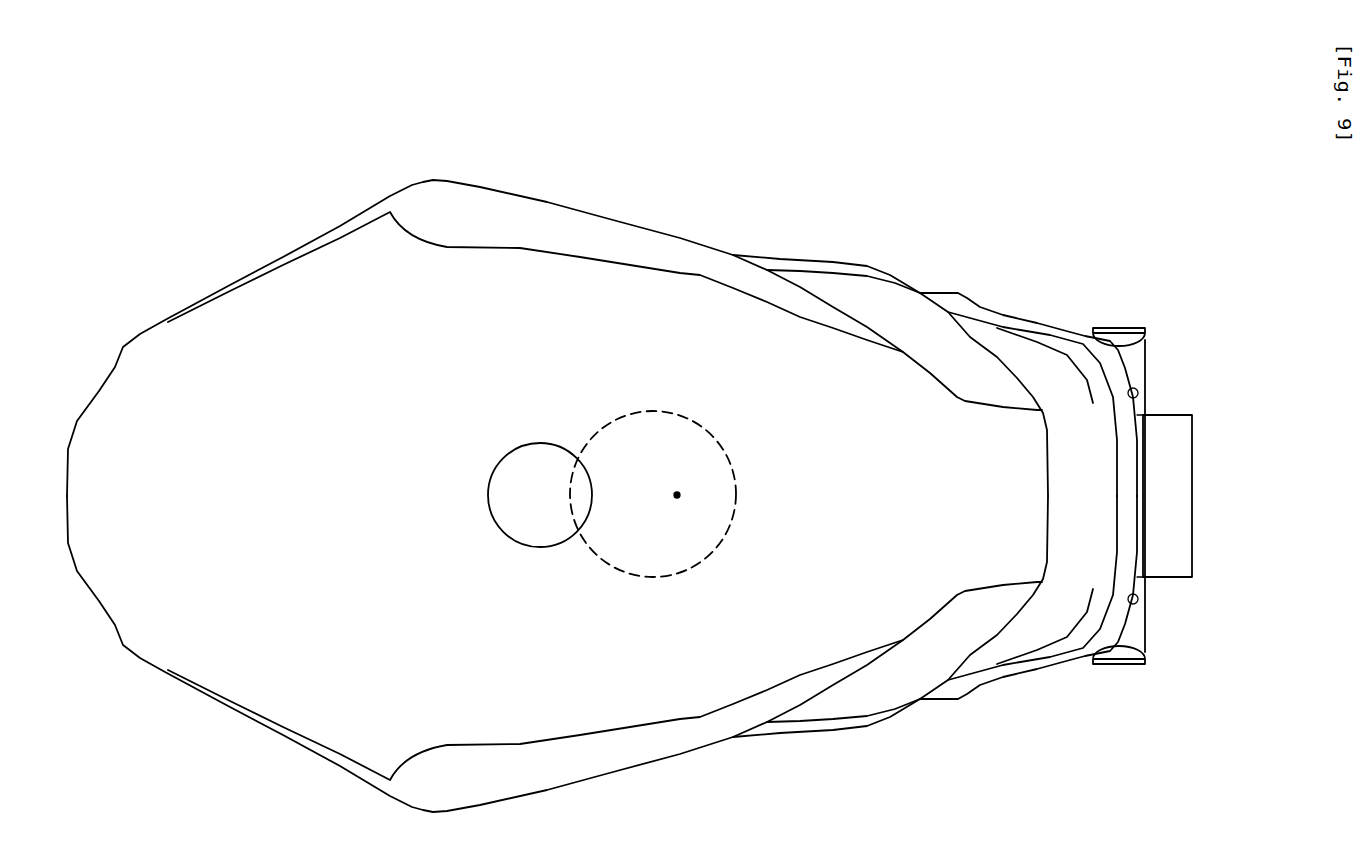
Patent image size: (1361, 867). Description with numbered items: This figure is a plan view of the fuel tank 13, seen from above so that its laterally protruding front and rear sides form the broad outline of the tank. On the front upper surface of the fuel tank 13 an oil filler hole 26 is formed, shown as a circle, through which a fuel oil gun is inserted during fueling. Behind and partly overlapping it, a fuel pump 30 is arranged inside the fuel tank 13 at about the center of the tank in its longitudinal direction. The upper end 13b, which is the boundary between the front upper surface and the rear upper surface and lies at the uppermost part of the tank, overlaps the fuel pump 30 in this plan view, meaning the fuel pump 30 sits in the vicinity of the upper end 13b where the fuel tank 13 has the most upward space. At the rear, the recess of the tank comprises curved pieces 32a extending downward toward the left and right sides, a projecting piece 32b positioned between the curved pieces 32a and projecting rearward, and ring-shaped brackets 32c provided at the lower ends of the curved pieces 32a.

The fuel tank 13 is at (233, 245).
The upper end 13b is at (677, 495).
The oil filler hole 26 is at (497, 465).
The fuel pump 30 is at (688, 416).
The curved pieces 32a is at (1130, 366).
The projecting piece 32b is at (1173, 500).
The ring-shaped brackets 32c is at (1116, 330).